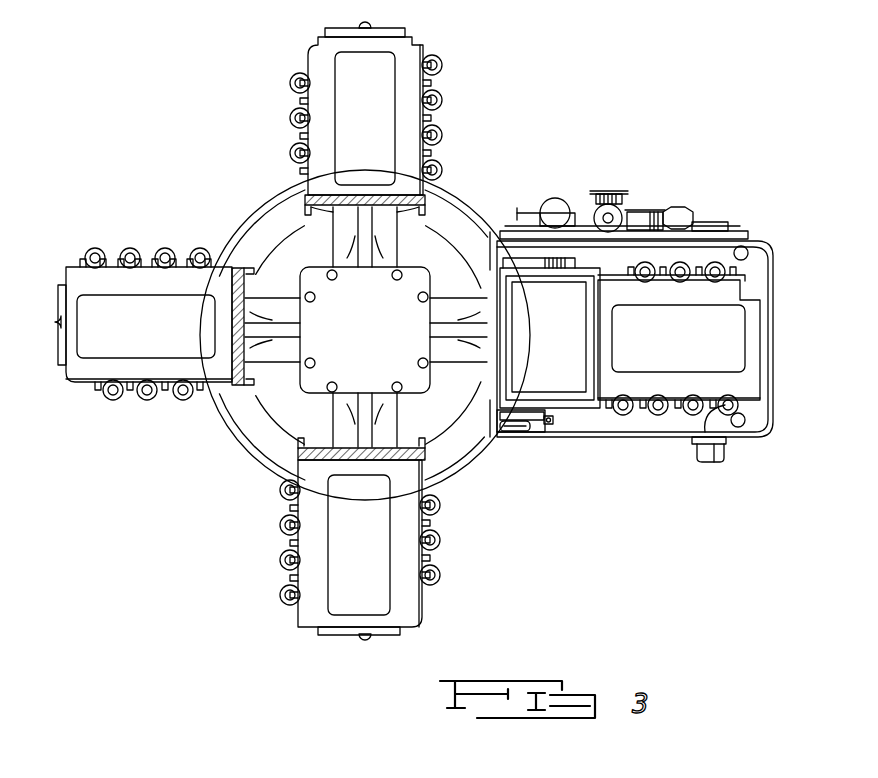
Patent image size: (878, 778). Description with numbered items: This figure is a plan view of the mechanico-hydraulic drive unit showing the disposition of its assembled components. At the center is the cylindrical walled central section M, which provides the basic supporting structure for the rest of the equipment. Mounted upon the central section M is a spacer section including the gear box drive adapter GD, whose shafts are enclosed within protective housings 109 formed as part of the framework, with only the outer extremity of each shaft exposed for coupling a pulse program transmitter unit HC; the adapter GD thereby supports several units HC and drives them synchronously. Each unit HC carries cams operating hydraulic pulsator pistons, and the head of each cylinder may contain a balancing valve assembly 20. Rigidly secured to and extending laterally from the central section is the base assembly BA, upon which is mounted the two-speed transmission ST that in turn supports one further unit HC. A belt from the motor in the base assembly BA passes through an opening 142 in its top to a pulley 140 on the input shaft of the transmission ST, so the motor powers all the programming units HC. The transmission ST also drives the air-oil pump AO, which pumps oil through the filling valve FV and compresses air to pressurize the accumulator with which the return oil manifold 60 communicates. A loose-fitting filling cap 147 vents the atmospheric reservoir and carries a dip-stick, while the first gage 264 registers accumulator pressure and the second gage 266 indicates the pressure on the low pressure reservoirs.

The central section M is at (250, 206).
The gear box drive adapter GD is at (299, 274).
The protective housings 109 is at (448, 300).
The pulse program transmitter unit HC is at (440, 45).
The balancing valve assembly 20 is at (140, 250).
The base assembly BA is at (680, 441).
The second gage 266 is at (610, 192).
The first gage 264 is at (642, 220).
The filling cap 147 is at (746, 250).
The filling valve FV is at (748, 420).
The return oil manifold 60 is at (713, 452).
The two-speed transmission ST is at (579, 412).
The air-oil pump AO is at (549, 428).
The opening 142 is at (526, 432).
The pulley 140 is at (501, 428).